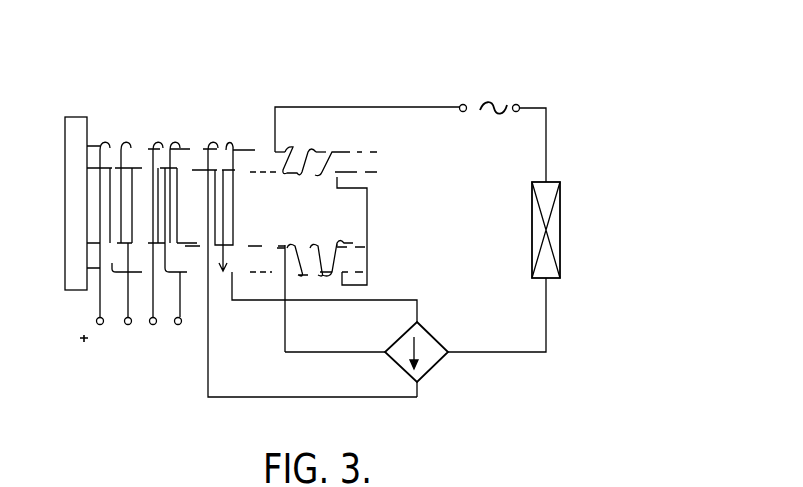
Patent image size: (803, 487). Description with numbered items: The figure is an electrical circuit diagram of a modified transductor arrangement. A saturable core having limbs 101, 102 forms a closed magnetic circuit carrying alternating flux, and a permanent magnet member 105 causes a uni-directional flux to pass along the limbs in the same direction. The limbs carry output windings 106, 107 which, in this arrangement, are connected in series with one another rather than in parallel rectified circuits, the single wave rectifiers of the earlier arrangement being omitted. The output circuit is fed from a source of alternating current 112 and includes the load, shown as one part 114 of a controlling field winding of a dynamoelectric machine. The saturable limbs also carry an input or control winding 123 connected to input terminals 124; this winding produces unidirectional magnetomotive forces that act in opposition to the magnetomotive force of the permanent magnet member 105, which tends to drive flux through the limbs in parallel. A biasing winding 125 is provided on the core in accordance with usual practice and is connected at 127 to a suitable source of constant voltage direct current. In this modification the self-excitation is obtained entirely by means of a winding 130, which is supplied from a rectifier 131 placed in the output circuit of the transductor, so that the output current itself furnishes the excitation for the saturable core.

The saturable core limb 101 is at (243, 160).
The saturable core limb 102 is at (258, 258).
The permanent magnet member 105 is at (80, 124).
The output winding 106 is at (333, 147).
The output winding 107 is at (337, 243).
The source of alternating current 112 is at (517, 104).
The part of controlling field winding 114 is at (557, 232).
The input or control winding 123 is at (122, 140).
The input terminals 124 is at (101, 325).
The biasing winding 125 is at (173, 140).
The biasing winding connection 127 is at (154, 325).
The self-excitation winding 130 is at (228, 140).
The rectifier 131 is at (460, 408).